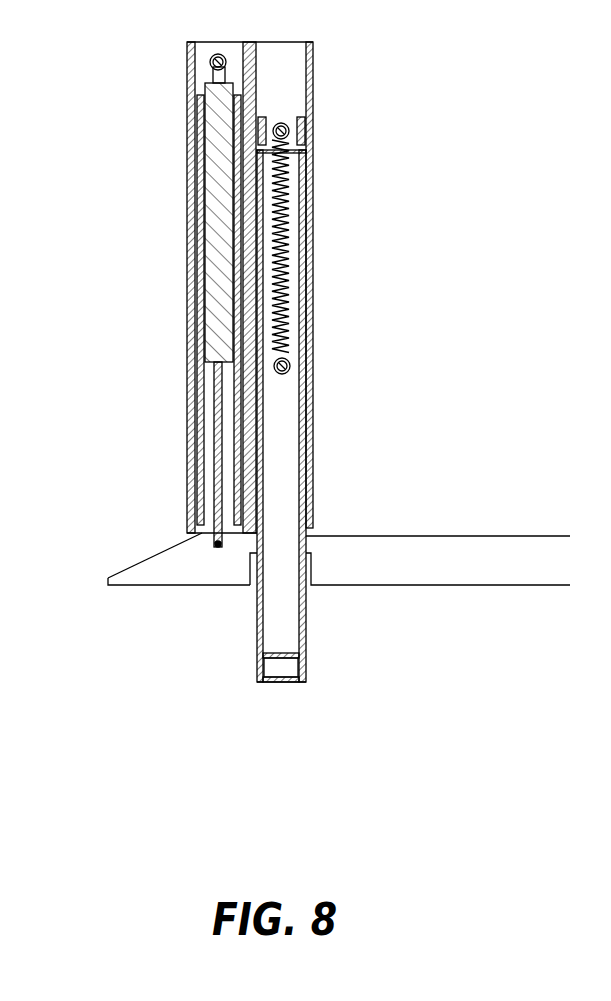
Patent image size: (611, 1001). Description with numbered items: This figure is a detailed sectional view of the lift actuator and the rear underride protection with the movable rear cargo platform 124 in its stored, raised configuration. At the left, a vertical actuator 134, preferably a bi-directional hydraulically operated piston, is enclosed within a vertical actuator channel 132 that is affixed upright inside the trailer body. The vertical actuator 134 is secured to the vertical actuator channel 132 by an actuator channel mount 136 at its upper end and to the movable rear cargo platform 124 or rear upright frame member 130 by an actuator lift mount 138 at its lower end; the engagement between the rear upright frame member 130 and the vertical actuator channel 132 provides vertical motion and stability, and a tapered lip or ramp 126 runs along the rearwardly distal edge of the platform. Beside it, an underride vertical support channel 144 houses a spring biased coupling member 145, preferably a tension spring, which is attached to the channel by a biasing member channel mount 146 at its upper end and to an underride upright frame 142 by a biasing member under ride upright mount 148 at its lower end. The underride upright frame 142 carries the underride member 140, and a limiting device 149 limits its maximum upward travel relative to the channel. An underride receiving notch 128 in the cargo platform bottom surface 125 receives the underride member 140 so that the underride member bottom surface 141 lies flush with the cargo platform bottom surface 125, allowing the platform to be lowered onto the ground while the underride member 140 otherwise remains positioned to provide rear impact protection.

The movable rear cargo platform 124 is at (512, 536).
The cargo platform bottom surface 125 is at (493, 589).
The tapered lip or ramp 126 is at (152, 553).
The underride receiving notch 128 is at (249, 575).
The rear upright frame member 130 is at (200, 424).
The vertical actuator channel 132 is at (212, 370).
The vertical actuator 134 is at (216, 178).
The actuator channel mount 136 is at (208, 79).
The actuator lift mount 138 is at (216, 542).
The underride member 140 is at (304, 667).
The underride member bottom surface 141 is at (283, 686).
The underride upright frame 142 is at (304, 610).
The underride vertical support channel 144 is at (312, 430).
The spring biased coupling member 145 is at (294, 270).
The biasing member channel mount 146 is at (292, 135).
The biasing member under ride upright mount 148 is at (290, 372).
The limiting device 149 is at (303, 122).